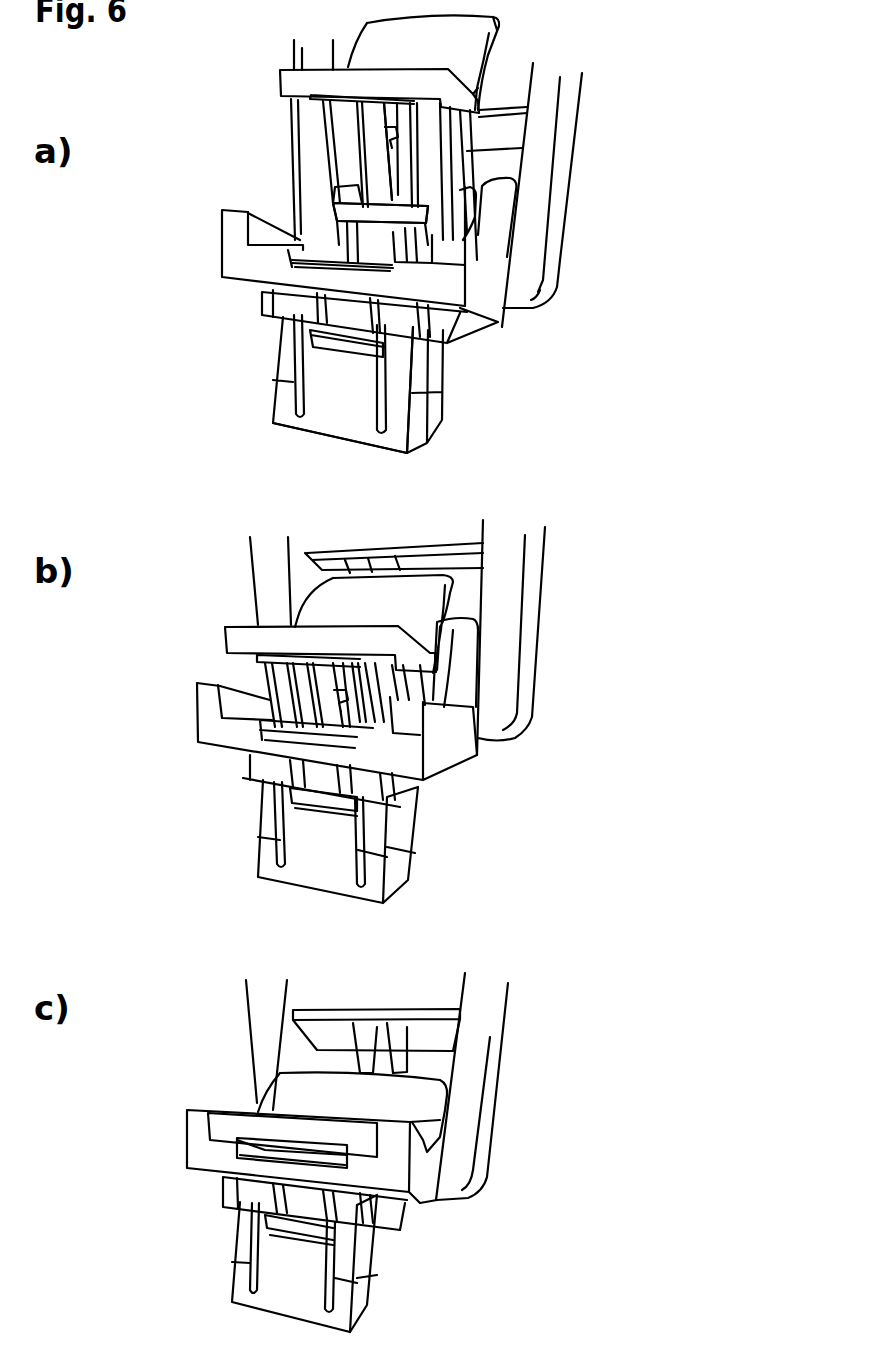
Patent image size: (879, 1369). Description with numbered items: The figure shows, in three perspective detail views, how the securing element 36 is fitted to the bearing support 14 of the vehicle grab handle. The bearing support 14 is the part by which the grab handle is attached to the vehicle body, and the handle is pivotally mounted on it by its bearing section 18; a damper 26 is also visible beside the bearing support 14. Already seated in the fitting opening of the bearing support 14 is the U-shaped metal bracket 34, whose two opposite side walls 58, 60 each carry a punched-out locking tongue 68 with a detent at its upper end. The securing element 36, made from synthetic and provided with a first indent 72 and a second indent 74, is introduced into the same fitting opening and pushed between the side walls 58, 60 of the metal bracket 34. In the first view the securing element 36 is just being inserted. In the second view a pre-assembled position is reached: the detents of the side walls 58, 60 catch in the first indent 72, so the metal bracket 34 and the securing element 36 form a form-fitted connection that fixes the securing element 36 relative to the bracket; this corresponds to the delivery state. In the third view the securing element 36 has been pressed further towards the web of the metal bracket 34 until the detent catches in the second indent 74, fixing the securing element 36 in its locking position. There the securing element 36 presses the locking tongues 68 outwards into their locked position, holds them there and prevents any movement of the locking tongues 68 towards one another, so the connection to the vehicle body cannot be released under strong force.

The bearing support 14 is at (473, 322).
The bearing section 18 is at (460, 1087).
The damper 26 is at (428, 254).
The metal bracket 34 is at (272, 417).
The securing element 36 is at (503, 41).
The side wall 58 is at (427, 372).
The side wall 60 is at (397, 412).
The locking tongue 68 is at (337, 357).
The first indent 72 is at (381, 190).
The second indent 74 is at (393, 134).